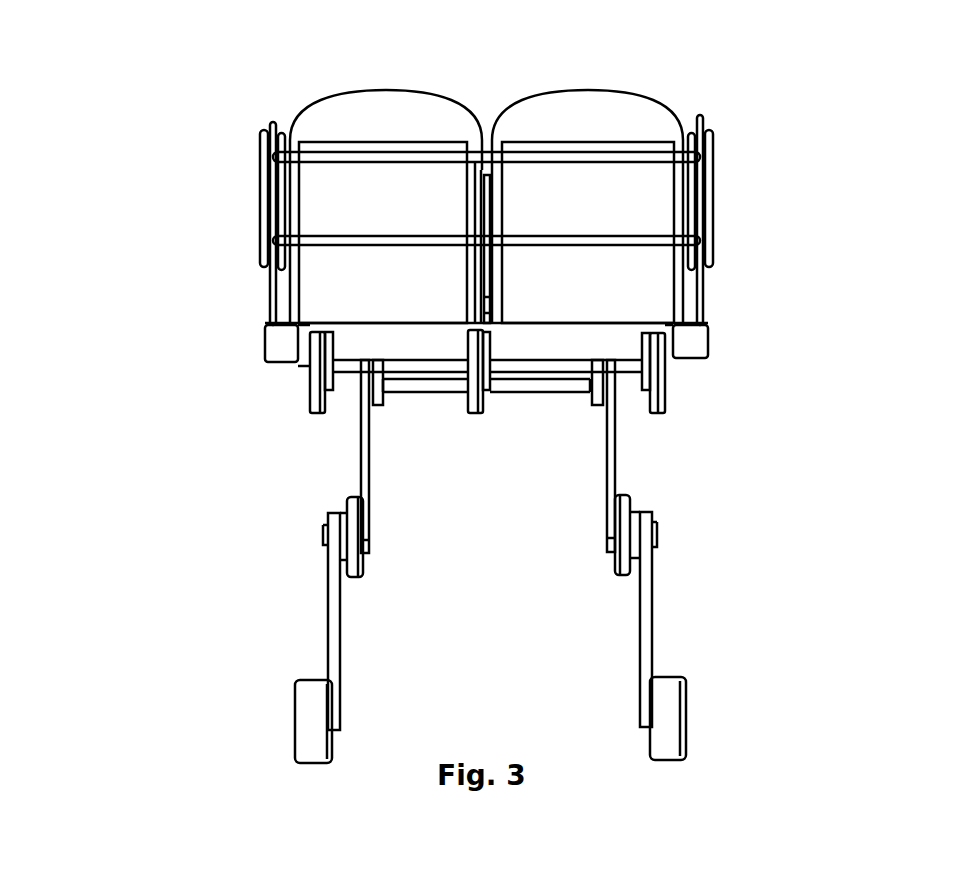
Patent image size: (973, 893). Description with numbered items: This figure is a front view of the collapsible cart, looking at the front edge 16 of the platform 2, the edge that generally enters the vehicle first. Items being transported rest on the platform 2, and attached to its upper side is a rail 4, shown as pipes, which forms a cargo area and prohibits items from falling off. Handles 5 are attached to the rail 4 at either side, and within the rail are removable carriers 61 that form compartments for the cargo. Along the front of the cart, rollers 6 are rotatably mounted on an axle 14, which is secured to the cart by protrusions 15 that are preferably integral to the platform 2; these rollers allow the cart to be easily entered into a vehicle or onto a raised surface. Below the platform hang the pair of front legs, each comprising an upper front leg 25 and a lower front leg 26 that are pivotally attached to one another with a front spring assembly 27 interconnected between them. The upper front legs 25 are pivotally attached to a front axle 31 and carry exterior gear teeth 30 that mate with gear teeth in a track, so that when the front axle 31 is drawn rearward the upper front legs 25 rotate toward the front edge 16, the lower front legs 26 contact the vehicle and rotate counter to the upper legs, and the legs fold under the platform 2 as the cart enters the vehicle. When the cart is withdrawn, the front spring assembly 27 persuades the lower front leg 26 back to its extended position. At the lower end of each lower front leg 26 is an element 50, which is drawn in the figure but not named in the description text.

The platform 2 is at (690, 342).
The rail 4 is at (370, 150).
The handles 5 is at (258, 178).
The roller 6 is at (466, 333).
The axle 14 is at (332, 358).
The protrusions 15 is at (490, 358).
The front edge 16 is at (283, 372).
The upper front leg 25 is at (358, 480).
The lower front leg 26 is at (326, 633).
The front spring assembly 27 is at (358, 593).
The exterior gear teeth 30 is at (386, 410).
The front axle 31 is at (538, 394).
The foot 50 is at (313, 745).
The removable carriers 61 is at (337, 187).